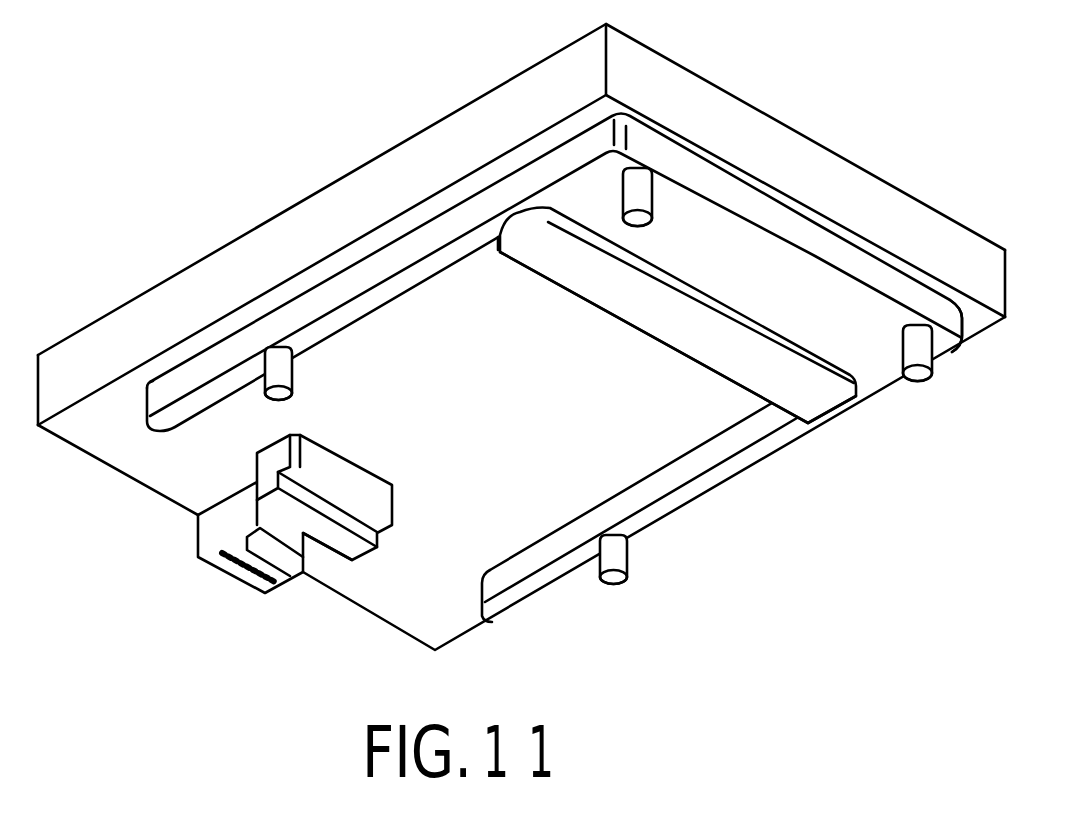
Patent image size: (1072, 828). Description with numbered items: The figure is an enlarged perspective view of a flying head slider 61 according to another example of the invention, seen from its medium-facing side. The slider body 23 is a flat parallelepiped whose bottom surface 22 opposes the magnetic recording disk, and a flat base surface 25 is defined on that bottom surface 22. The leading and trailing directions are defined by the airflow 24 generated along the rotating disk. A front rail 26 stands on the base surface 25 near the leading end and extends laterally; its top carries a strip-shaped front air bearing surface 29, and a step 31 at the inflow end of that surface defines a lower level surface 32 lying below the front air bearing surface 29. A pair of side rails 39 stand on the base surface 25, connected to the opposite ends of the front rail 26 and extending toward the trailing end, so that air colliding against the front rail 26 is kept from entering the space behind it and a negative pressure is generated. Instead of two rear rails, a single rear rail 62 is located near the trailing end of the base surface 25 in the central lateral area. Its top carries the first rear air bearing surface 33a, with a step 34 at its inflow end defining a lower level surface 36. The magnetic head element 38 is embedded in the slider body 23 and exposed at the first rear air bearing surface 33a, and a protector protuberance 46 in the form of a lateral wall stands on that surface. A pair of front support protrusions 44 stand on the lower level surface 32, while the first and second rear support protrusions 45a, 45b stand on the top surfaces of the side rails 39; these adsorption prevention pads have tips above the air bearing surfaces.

The flying head slider 61 is at (203, 187).
The slider body 23 is at (453, 132).
The base surface 25 is at (235, 332).
The side rails 39 is at (430, 283).
The step 31 is at (730, 312).
The front air bearing surface 29 is at (685, 333).
The front rail 26 is at (947, 318).
The lower level surface 32 is at (883, 388).
The front support protrusions 44 is at (635, 193).
The first rear support protrusion 45a is at (622, 560).
The second rear support protrusion 45b is at (292, 362).
The airflow 24 is at (490, 417).
The bottom surface 22 is at (259, 534).
The rear rail 62 is at (198, 513).
The step 34 is at (352, 520).
The lower level surface 36 is at (330, 493).
The first rear air bearing surface 33a is at (320, 552).
The protector protuberance 46 is at (287, 573).
The magnetic head element 38 is at (235, 575).